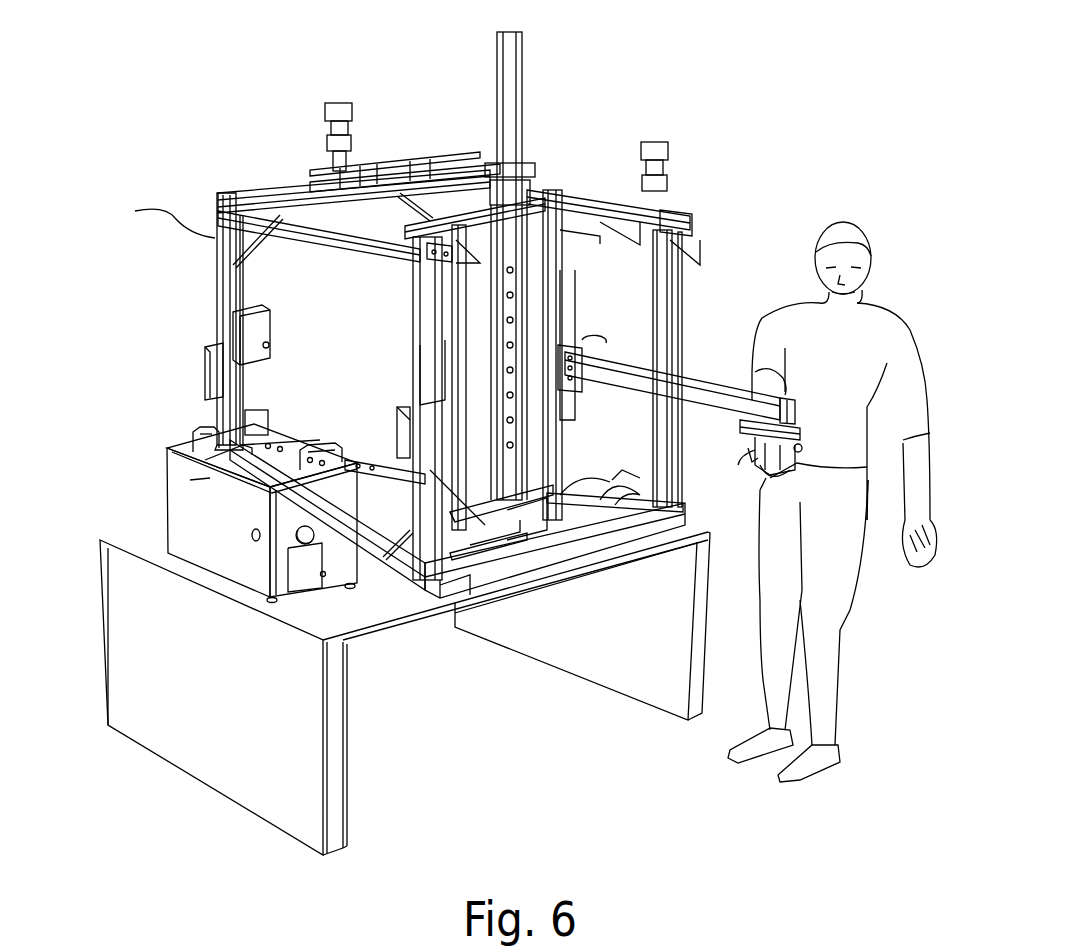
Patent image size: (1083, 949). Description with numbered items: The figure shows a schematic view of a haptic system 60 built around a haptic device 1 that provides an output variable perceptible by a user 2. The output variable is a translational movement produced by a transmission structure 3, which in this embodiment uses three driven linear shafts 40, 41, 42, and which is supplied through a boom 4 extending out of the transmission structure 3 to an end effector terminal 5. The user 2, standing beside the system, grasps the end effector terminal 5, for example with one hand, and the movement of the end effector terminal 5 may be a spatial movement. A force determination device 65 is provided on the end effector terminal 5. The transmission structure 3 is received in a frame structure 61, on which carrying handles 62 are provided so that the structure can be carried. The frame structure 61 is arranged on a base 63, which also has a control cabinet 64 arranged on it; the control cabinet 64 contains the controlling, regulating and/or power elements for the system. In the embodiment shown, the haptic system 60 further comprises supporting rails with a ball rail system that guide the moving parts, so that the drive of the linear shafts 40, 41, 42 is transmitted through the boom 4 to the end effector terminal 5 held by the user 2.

The haptic device 1 is at (530, 172).
The user 2 is at (880, 323).
The transmission structure 3 is at (552, 182).
The boom 4 is at (705, 375).
The end effector terminal 5 is at (740, 455).
The driven linear shaft 40 is at (387, 254).
The driven linear shaft 41 is at (563, 270).
The driven linear shaft 42 is at (392, 160).
The haptic system 60 is at (697, 72).
The frame structure 61 is at (217, 288).
The carrying handles 62 is at (205, 378).
The base 63 is at (355, 620).
The control cabinet 64 is at (188, 490).
The force determination device 65 is at (797, 421).